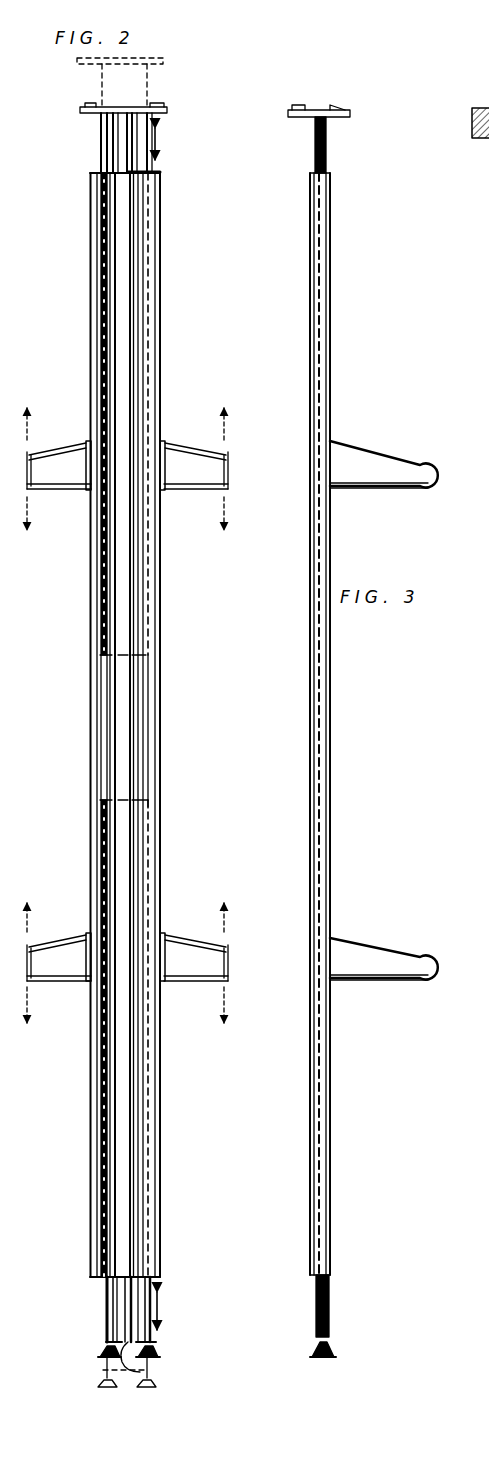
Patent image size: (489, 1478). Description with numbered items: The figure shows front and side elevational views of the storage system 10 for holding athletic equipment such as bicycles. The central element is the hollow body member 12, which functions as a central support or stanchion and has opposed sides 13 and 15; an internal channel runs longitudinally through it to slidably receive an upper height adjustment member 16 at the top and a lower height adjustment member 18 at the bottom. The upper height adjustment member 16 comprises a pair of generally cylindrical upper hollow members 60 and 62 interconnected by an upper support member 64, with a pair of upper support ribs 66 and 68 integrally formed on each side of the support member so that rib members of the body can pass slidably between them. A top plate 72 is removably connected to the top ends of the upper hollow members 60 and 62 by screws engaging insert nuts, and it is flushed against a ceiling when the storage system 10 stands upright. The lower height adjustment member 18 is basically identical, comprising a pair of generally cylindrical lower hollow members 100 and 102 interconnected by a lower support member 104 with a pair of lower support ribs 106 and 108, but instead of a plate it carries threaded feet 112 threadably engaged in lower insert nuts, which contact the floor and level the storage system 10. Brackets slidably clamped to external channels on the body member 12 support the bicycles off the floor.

In FIG. 2, the storage system 10 is at (148, 725).
In FIG. 2, the hollow body member 12 is at (144, 725).
In FIG. 3, the hollow body member 12 is at (330, 715).
In FIG. 2, the side of body member 13 is at (74, 725).
In FIG. 2, the side of body member 15 is at (173, 725).
In FIG. 2, the upper height adjustment member 16 is at (183, 142).
In FIG. 2, the lower height adjustment member 18 is at (98, 1285).
In FIG. 2, the upper hollow member 60 is at (138, 152).
In FIG. 2, the upper hollow member 62 is at (113, 140).
In FIG. 3, the upper hollow member 62 is at (349, 144).
In FIG. 2, the upper support member 64 is at (108, 128).
In FIG. 2, the upper support rib 66 is at (110, 165).
In FIG. 2, the upper support rib 68 is at (162, 181).
In FIG. 2, the top plate 72 is at (115, 113).
In FIG. 3, the top plate 72 is at (335, 89).
In FIG. 2, the lower hollow member 100 is at (110, 1298).
In FIG. 3, the lower hollow member 100 is at (360, 1299).
In FIG. 2, the lower hollow member 102 is at (189, 1306).
In FIG. 2, the lower support member 104 is at (150, 1275).
In FIG. 2, the lower support rib 106 is at (125, 1316).
In FIG. 2, the lower support rib 108 is at (150, 1365).
In FIG. 3, the threaded foot 112 is at (352, 1338).